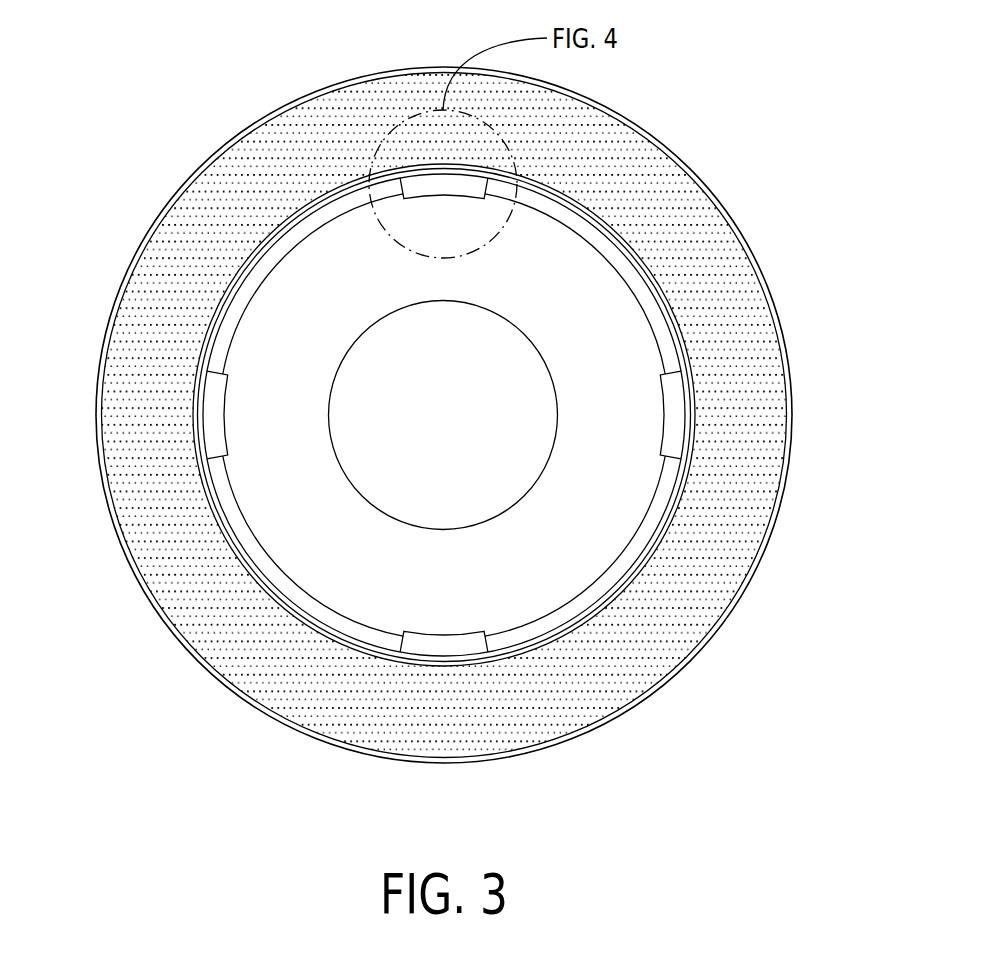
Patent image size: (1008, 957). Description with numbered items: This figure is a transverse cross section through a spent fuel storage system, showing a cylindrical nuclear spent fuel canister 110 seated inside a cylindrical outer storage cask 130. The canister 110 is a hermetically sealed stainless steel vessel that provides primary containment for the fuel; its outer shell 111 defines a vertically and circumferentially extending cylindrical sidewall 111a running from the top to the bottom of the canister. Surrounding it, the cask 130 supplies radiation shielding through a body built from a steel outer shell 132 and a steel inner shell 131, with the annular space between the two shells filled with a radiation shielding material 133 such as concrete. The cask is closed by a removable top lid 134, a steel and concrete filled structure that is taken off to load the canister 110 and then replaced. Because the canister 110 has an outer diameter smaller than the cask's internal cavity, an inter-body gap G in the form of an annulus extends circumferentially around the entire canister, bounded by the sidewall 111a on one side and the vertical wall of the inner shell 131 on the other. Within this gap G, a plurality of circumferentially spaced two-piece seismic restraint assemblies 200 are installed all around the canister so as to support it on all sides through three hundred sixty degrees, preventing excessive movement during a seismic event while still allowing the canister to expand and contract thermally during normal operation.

The nuclear spent fuel canister 110 is at (370, 595).
The outer shell 111 is at (273, 270).
The cylindrical sidewall 111a is at (320, 225).
The storage cask 130 is at (735, 147).
The inner shell 131 is at (265, 597).
The outer shell 132 is at (592, 730).
The radiation shielding material 133 is at (662, 638).
The top lid 134 is at (605, 502).
The seismic restraint assembly 200 is at (458, 208).
The inter-body gap G is at (225, 333).